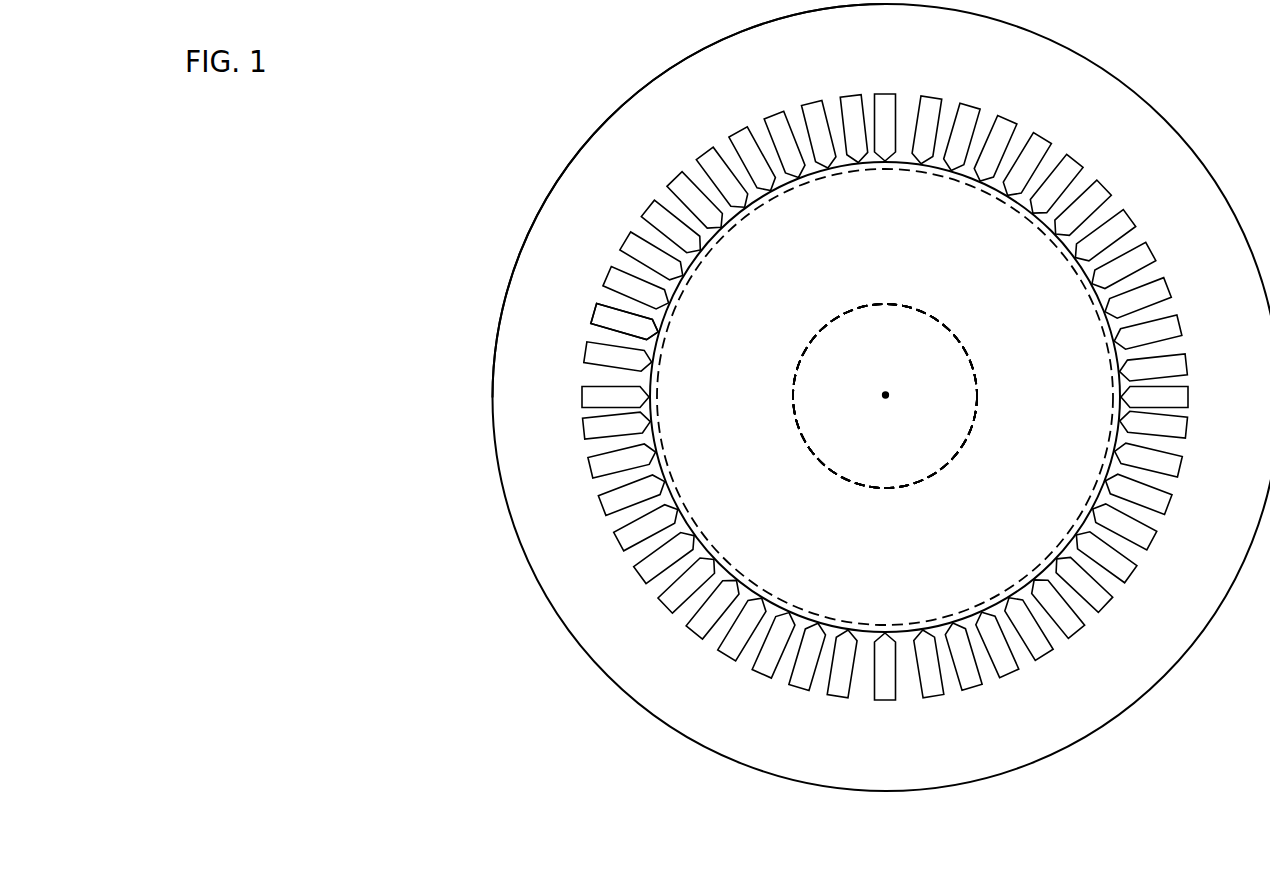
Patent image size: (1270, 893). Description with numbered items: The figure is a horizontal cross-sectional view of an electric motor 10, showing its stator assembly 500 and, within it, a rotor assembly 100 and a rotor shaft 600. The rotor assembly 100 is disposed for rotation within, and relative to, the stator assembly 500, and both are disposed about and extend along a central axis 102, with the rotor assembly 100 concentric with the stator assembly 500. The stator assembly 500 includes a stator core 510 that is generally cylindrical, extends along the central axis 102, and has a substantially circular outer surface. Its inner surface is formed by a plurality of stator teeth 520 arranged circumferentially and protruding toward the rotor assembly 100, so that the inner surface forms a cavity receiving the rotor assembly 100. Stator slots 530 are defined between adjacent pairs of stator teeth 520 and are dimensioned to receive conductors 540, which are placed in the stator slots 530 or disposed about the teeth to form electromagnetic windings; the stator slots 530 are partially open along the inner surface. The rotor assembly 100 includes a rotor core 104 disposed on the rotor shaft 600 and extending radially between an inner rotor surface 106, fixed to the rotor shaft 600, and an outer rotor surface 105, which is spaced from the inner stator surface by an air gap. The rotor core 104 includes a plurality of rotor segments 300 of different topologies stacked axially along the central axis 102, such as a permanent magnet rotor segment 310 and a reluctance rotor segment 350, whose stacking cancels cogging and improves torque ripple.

The electric motor 10 is at (488, 106).
The rotor assembly 100 is at (941, 468).
The central axis 102 is at (883, 398).
The rotor core 104 is at (929, 284).
The rotor segments 300 is at (885, 396).
The permanent magnet rotor segment 310 is at (885, 396).
The reluctance rotor segment 350 is at (885, 396).
The outer rotor surface 105 is at (1110, 367).
The inner rotor surface 106 is at (972, 366).
The stator assembly 500 is at (524, 559).
The stator core 510 is at (582, 194).
The stator teeth 520 is at (638, 305).
The stator slots 530 is at (625, 319).
The conductors 540 is at (626, 322).
The rotor shaft 600 is at (892, 468).